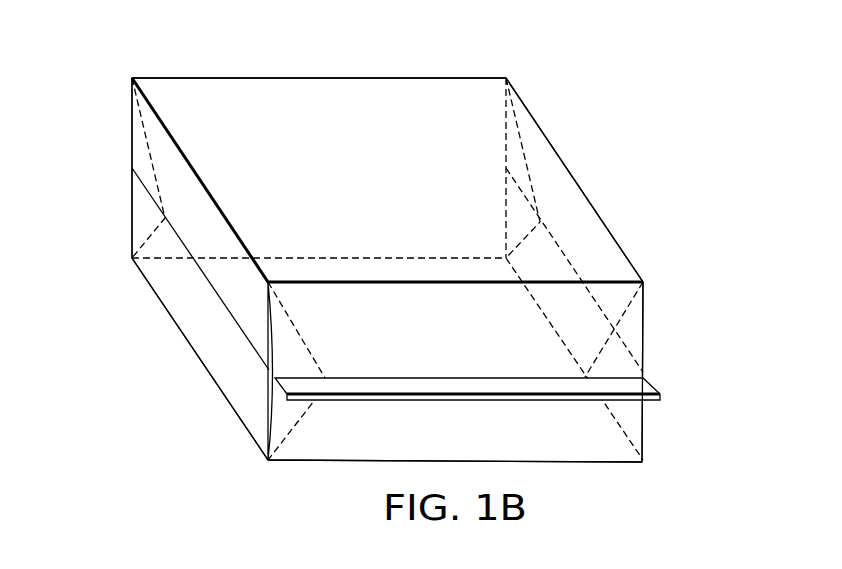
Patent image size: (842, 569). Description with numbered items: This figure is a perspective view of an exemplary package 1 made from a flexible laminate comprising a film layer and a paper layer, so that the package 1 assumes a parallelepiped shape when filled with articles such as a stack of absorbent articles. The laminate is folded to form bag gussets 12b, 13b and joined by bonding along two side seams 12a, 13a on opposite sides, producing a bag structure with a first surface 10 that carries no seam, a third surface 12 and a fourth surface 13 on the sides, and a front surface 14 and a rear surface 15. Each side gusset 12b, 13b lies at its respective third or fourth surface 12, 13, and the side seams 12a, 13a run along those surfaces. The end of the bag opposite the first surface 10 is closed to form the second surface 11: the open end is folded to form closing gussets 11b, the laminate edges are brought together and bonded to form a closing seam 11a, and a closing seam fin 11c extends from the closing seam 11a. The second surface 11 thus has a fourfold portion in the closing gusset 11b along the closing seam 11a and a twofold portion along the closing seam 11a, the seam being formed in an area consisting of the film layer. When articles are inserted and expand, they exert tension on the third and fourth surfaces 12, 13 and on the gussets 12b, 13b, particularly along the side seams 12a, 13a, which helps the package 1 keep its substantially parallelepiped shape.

The package 1 is at (578, 92).
The first surface 10 is at (343, 102).
The front surface 14 is at (218, 90).
The second surface 11 is at (583, 447).
The closing seam 11a is at (462, 378).
The closing gusset 11b is at (287, 340).
The closing seam fin 11c is at (495, 402).
The third surface 12 is at (202, 347).
The first side seam 12a is at (205, 282).
The bag gusset 12b is at (140, 222).
The fourth surface 13 is at (612, 171).
The second side seam 13a is at (568, 262).
The bag gusset 13b is at (518, 150).
The rear surface 15 is at (320, 487).